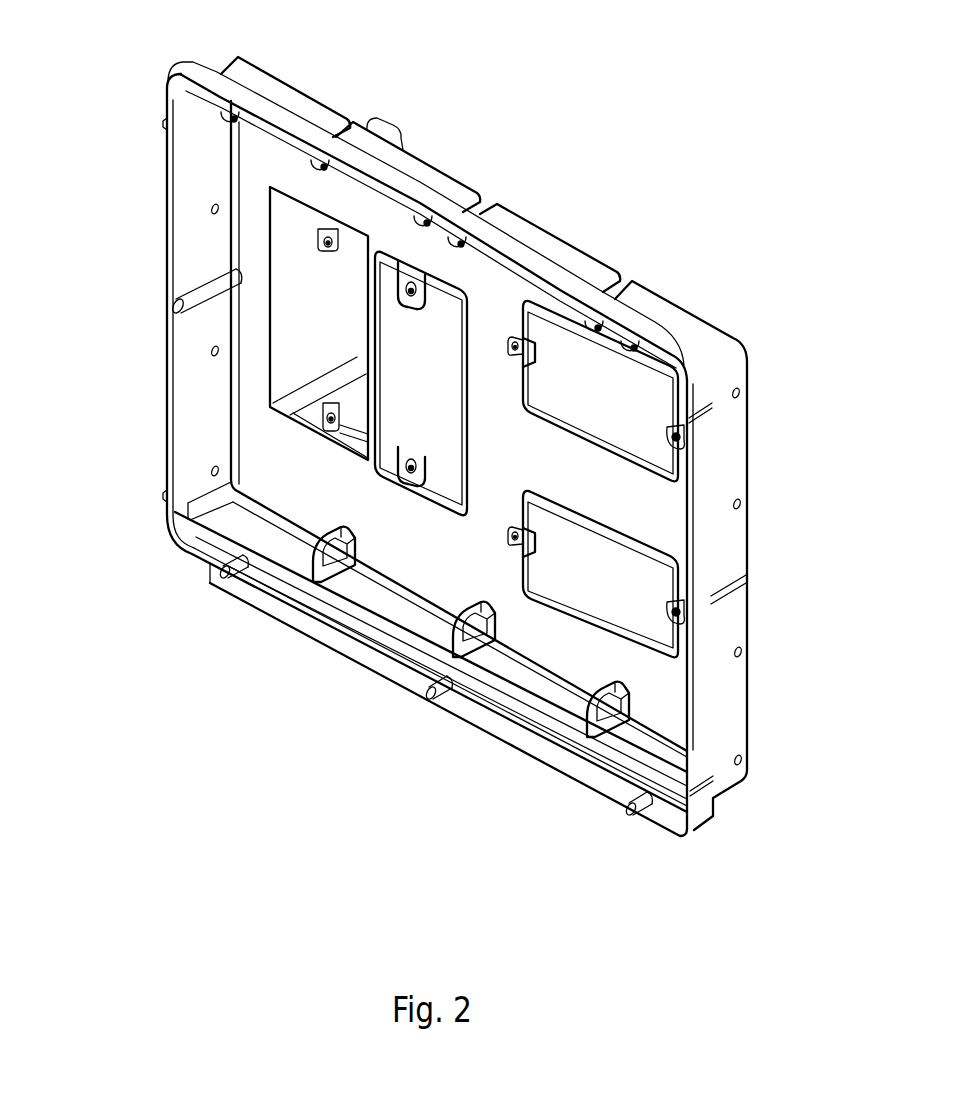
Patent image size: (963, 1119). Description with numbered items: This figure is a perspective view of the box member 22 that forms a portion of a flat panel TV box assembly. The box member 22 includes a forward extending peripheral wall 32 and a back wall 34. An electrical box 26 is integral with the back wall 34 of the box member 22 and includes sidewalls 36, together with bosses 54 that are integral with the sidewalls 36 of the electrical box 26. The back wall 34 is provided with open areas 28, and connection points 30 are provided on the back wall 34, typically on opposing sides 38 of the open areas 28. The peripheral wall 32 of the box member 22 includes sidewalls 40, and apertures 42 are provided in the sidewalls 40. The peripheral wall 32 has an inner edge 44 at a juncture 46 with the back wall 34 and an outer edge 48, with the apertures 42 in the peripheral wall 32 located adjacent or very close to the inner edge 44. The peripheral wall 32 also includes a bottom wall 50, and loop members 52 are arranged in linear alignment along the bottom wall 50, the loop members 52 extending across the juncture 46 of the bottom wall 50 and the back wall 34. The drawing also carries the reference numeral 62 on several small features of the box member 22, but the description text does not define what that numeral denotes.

The box member 22 is at (98, 100).
The electrical box 26 is at (356, 262).
The open areas 28 is at (408, 395).
The connection points 30 is at (410, 303).
The peripheral wall 32 is at (186, 185).
The back wall 34 is at (488, 450).
The sidewalls 36 is at (301, 308).
The opposing sides 38 is at (410, 258).
The sidewalls 40 is at (187, 143).
The apertures 42 is at (212, 355).
The inner edge 44 is at (228, 425).
The juncture 46 is at (440, 645).
The outer edge 48 is at (240, 584).
The bottom wall 50 is at (523, 698).
The loop members 52 is at (322, 560).
The bosses 54 is at (320, 243).
The post 62 is at (212, 293).